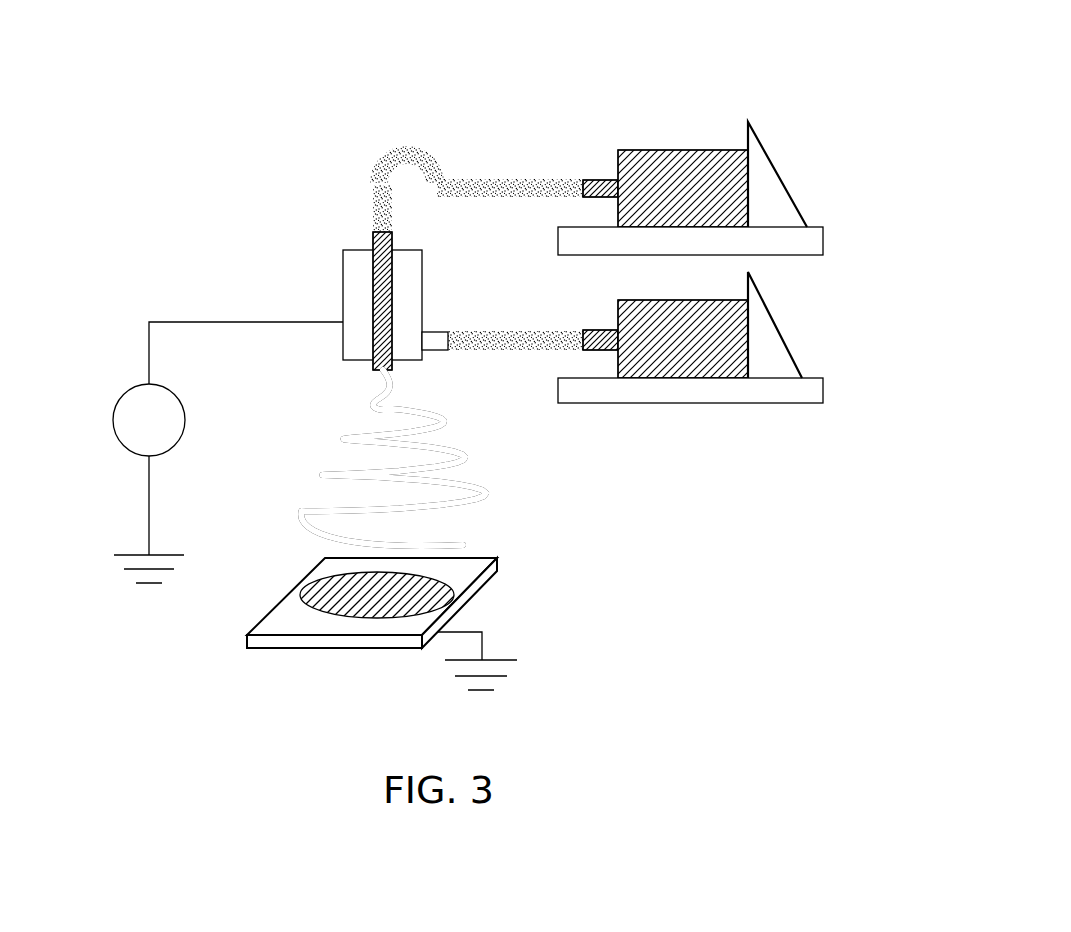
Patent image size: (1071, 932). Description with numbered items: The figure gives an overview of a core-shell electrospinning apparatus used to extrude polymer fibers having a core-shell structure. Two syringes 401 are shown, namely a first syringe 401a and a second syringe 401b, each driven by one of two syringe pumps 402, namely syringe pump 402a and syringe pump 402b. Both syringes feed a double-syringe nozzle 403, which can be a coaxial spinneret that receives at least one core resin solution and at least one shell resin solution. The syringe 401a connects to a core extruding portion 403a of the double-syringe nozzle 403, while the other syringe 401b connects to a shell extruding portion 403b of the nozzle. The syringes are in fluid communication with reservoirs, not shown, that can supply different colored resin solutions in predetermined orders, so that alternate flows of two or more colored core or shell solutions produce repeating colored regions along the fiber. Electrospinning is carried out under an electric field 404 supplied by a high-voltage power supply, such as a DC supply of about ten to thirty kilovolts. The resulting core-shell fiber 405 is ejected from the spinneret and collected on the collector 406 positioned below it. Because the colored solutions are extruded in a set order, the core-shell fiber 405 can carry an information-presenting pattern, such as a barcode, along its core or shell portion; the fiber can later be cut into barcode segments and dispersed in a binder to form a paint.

The syringes 401 is at (643, 249).
The syringe 401a is at (623, 155).
The syringe 401b is at (628, 360).
The syringe pumps 402 is at (725, 324).
The syringe pump 402a is at (802, 230).
The syringe pump 402b is at (768, 380).
The double-syringe nozzle 403 is at (403, 297).
The core extruding portion 403a is at (380, 243).
The shell extruding portion 403b is at (436, 347).
The electric field 404 is at (130, 380).
The core-shell fiber 405 is at (405, 585).
The collector 406 is at (360, 648).